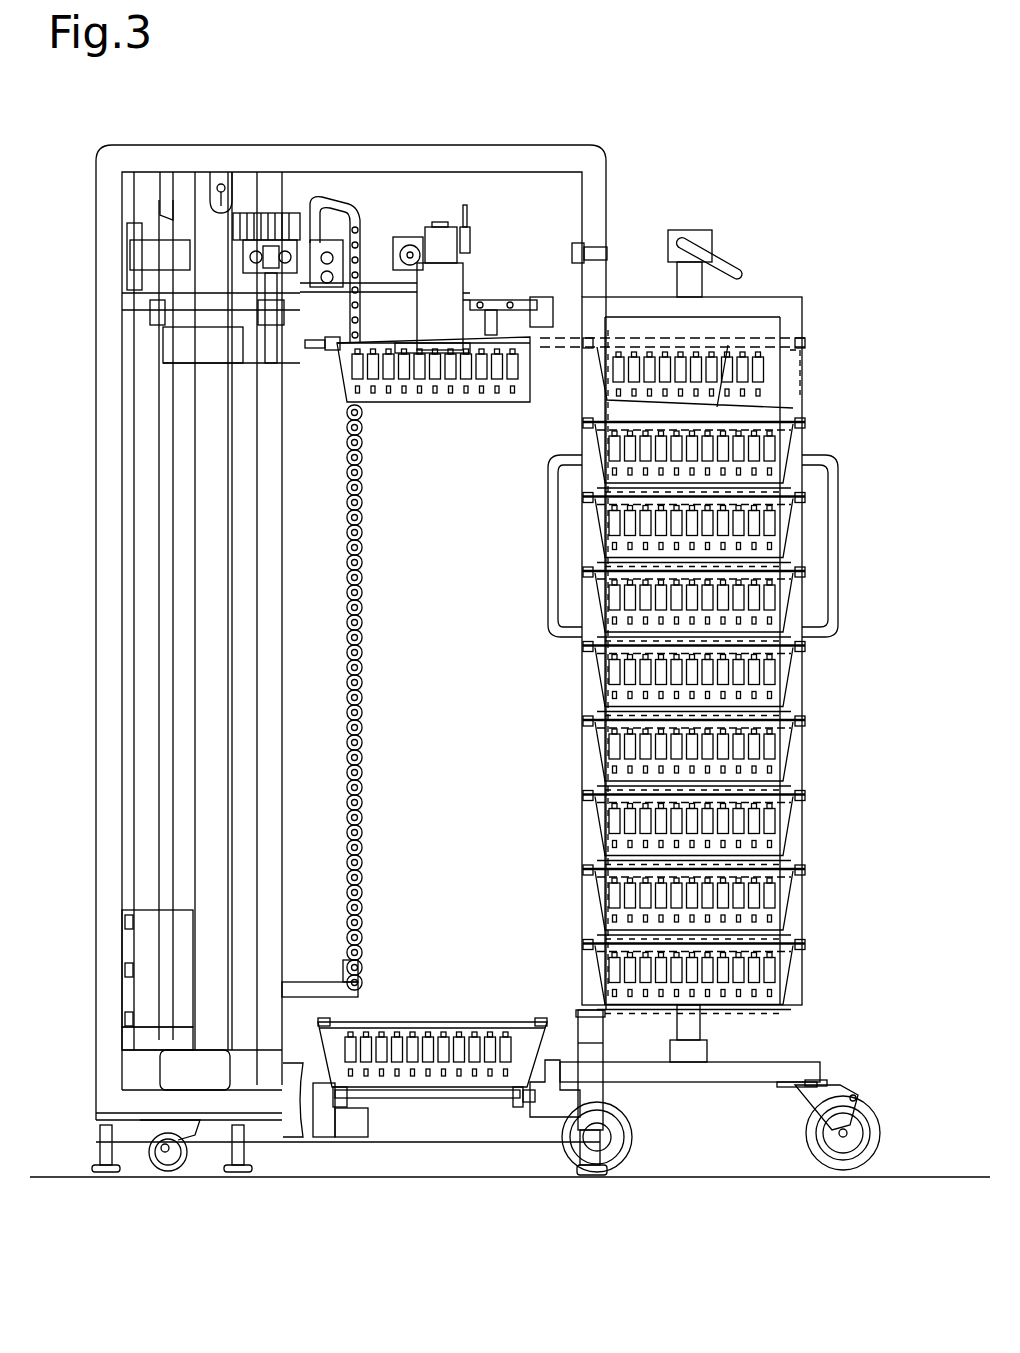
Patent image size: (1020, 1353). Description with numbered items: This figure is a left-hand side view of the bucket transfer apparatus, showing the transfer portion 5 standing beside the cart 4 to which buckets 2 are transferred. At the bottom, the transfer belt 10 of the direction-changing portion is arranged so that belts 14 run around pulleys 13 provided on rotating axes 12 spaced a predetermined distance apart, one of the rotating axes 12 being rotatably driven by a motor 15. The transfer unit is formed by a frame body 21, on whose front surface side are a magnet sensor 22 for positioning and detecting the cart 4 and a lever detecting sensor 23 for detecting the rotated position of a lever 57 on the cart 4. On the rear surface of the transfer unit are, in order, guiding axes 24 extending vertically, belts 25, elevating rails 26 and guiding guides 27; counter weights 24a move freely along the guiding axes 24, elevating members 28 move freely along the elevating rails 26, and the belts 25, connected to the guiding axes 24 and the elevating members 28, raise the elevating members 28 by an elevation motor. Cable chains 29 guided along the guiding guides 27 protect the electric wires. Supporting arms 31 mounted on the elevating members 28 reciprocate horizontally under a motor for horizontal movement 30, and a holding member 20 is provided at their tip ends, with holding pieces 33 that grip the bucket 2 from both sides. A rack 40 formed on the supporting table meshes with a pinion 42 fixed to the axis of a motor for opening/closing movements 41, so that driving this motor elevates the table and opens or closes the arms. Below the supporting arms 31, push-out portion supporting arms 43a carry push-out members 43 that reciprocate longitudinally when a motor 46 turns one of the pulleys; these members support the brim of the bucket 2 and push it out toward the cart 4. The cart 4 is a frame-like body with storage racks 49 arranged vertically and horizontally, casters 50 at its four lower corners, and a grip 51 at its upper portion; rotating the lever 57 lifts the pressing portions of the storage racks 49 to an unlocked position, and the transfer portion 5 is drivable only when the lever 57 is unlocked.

The bucket 2 is at (478, 402).
The cart 4 is at (805, 300).
The transfer portion 5 is at (575, 128).
The transfer belt 10 is at (298, 1240).
The rotating axes 12 is at (425, 1100).
The pulleys 13 is at (512, 1107).
The belts 14 is at (528, 1105).
The motor 15 is at (345, 1137).
The holding member 20 is at (480, 208).
The frame body 21 is at (600, 150).
The magnet sensor 22 is at (607, 1025).
The lever detecting sensor 23 is at (608, 250).
The guiding axes 24 is at (165, 588).
The counter weights 24a is at (145, 943).
The belts 25 is at (193, 672).
The elevating rails 26 is at (257, 748).
The guiding guides 27 is at (360, 978).
The elevating members 28 is at (250, 205).
The cable chains 29 is at (365, 770).
The motor for horizontal movement 30 is at (170, 345).
The supporting arms 31 is at (335, 200).
The holding pieces 33 is at (412, 353).
The rack 40 is at (445, 225).
The motor for opening/closing movements 41 is at (402, 236).
The pinion 42 is at (415, 222).
The push-out members 43 is at (328, 352).
The push-out portion supporting arms 43a is at (505, 297).
The motor 46 is at (128, 248).
The storage racks 49 is at (800, 382).
The casters 50 is at (855, 1103).
The grip 51 is at (840, 620).
The lever 57 is at (722, 258).